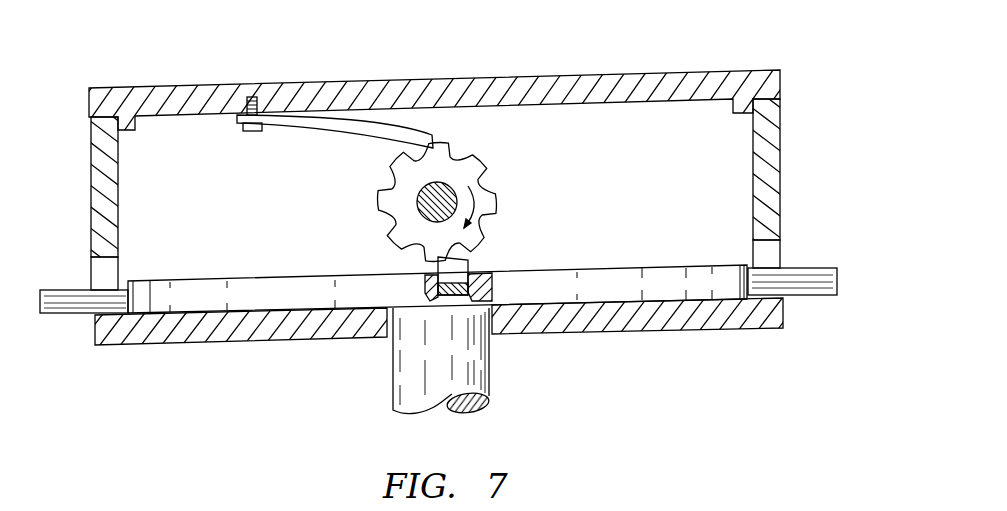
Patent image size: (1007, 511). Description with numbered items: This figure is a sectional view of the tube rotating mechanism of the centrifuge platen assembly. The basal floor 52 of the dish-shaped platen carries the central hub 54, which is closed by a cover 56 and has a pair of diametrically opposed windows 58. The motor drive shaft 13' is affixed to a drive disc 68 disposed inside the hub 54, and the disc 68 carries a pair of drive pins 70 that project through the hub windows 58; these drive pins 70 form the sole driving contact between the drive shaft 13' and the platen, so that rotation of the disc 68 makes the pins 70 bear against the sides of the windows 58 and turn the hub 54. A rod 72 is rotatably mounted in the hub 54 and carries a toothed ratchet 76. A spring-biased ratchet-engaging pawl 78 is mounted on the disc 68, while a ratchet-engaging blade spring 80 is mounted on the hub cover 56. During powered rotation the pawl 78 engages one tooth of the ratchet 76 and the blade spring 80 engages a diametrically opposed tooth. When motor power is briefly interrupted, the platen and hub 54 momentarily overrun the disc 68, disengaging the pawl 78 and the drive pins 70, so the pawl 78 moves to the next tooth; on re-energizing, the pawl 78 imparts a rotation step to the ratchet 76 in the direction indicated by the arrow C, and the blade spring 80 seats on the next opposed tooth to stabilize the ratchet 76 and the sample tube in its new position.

The motor drive shaft 13' is at (410, 361).
The basal floor 52 is at (638, 327).
The central hub 54 is at (780, 152).
The cover 56 is at (562, 78).
The windows 58 is at (100, 272).
The drive disc 68 is at (662, 268).
The drive pins 70 is at (62, 312).
The rod 72 is at (413, 197).
The toothed ratchet 76 is at (468, 177).
The ratchet-engaging pawl 78 is at (470, 264).
The blade spring 80 is at (361, 121).
The direction of rotation C is at (477, 208).